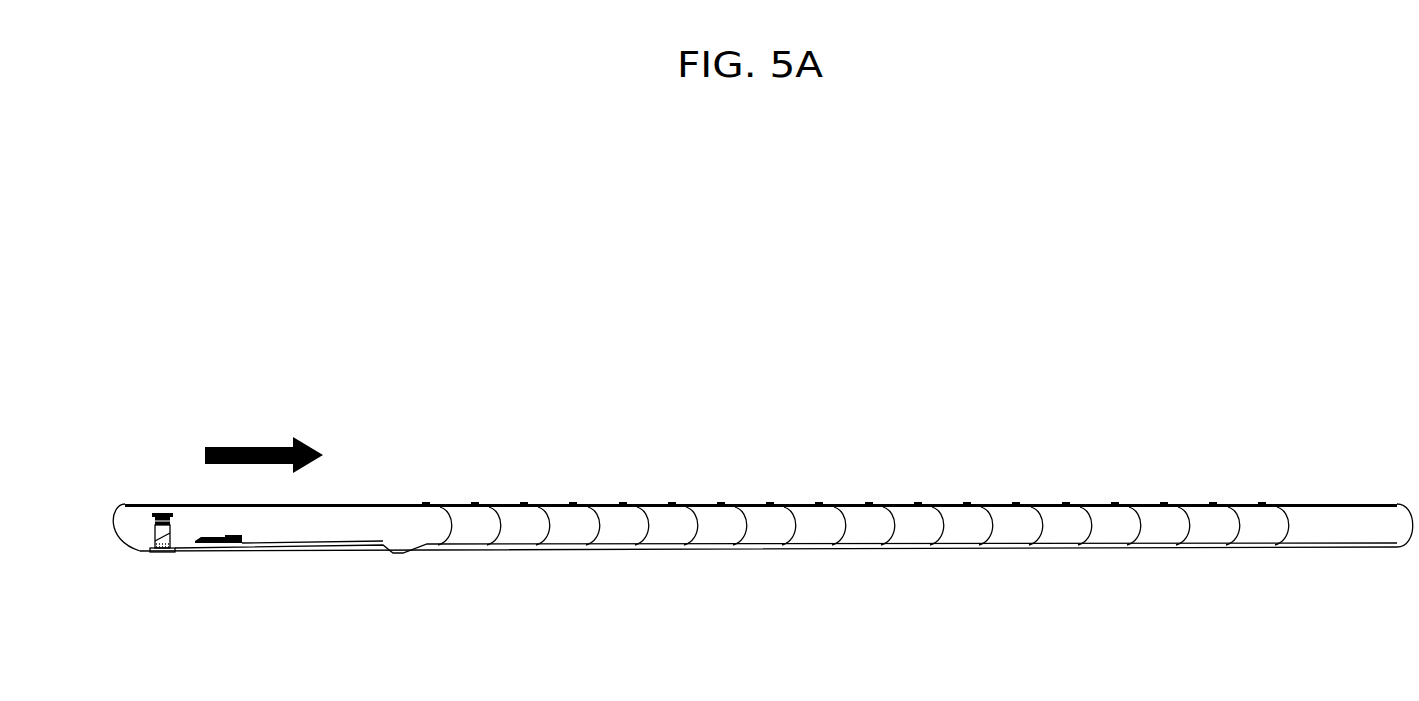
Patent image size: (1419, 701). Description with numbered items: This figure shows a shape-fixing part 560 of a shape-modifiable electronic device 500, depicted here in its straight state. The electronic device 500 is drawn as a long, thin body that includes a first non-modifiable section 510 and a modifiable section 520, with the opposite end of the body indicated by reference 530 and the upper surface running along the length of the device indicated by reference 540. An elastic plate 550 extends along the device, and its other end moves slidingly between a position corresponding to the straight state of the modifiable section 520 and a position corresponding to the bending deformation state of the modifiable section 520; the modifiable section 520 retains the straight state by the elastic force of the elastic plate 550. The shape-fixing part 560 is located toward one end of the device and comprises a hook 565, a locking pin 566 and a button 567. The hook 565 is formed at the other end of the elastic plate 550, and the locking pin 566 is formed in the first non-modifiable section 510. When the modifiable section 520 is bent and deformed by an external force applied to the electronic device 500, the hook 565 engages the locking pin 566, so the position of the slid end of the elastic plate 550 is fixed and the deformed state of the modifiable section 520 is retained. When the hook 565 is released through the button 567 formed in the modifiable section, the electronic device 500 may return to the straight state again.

The shape-modifiable electronic device 500 is at (751, 523).
The first non-modifiable section 510 is at (345, 565).
The modifiable section 520 is at (892, 472).
The end cap 530 is at (1344, 559).
The flexible display 540 is at (720, 503).
The elastic plate 550 is at (707, 548).
The shape-fixing part 560 is at (236, 606).
The hook 565 is at (230, 543).
The locking pin 566 is at (165, 552).
The button 567 is at (152, 552).